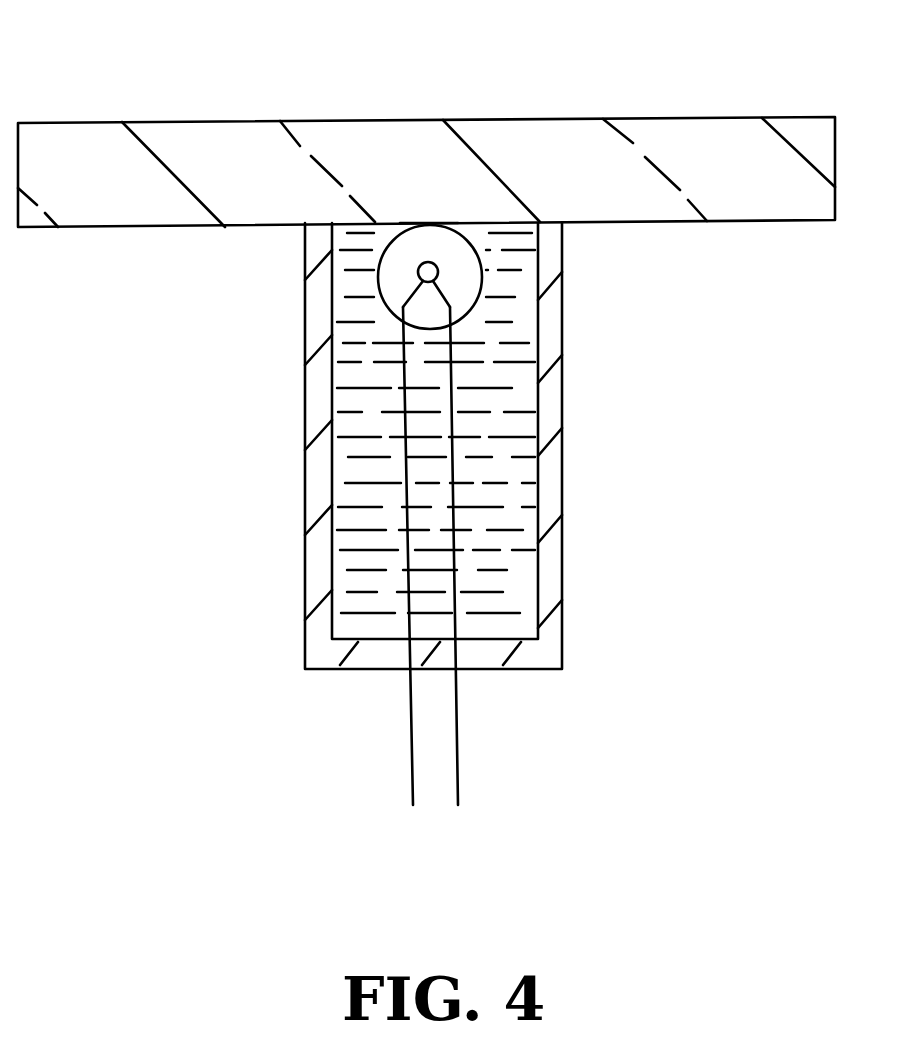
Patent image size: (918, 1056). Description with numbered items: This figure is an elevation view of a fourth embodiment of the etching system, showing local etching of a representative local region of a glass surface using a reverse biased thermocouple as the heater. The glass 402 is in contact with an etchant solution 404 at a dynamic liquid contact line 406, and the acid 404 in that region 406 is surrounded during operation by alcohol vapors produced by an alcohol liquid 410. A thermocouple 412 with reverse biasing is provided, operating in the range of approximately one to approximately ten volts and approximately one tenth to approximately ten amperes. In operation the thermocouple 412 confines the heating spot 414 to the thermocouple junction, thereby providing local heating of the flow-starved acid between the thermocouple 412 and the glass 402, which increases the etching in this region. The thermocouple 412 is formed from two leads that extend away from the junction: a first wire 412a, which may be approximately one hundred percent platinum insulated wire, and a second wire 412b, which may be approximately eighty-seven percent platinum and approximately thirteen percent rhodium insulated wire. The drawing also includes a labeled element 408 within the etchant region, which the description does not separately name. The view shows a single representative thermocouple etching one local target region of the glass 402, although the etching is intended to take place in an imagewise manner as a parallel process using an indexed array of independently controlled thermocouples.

The glass 402 is at (698, 117).
The etchant solution 404 is at (355, 497).
The dynamic liquid contact line 406 is at (365, 233).
The fill material 408 is at (520, 515).
The alcohol liquid 410 is at (452, 255).
The thermocouple 412 is at (416, 273).
The thermocouple first wire 412a is at (409, 748).
The second wire 412b is at (458, 742).
The heating spot 414 is at (428, 222).